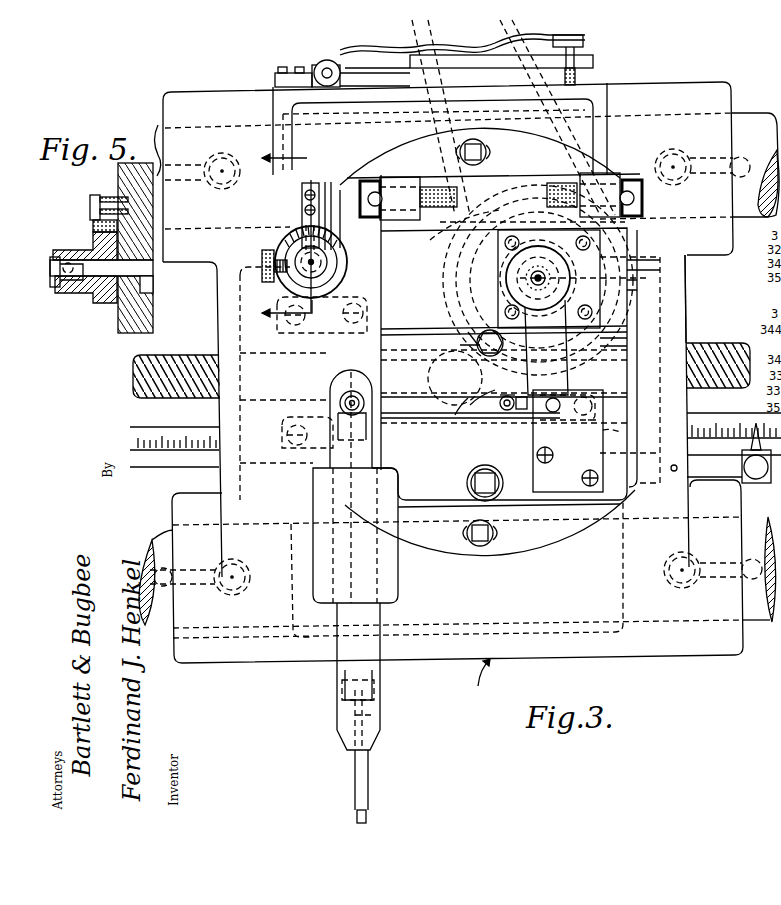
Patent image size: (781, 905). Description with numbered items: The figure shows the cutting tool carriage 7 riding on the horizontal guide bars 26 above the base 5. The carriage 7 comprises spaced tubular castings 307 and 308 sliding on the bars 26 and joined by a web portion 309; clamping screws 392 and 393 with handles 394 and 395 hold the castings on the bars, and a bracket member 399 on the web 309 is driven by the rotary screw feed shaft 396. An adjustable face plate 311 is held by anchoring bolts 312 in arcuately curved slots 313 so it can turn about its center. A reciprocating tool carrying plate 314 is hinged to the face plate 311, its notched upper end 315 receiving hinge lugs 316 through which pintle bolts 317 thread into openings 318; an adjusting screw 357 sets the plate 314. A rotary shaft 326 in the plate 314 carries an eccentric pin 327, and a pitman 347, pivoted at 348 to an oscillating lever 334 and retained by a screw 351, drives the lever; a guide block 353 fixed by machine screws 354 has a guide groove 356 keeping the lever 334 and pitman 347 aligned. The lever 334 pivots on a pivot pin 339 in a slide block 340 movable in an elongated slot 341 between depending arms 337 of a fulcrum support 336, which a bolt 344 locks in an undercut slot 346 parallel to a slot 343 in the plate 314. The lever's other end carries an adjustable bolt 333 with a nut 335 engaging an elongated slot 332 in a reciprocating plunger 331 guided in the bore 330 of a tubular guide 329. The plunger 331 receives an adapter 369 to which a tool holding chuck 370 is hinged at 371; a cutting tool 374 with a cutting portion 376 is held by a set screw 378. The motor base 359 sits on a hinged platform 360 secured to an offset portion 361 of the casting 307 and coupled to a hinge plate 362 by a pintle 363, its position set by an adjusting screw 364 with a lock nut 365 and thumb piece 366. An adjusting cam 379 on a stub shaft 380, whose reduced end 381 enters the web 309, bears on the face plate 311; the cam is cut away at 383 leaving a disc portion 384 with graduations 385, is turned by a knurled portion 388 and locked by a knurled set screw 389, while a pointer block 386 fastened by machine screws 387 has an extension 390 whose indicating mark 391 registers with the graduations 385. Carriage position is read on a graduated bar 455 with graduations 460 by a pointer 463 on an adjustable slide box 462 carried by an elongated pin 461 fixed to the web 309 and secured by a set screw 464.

In FIG. 3, the base 5 is at (277, 205).
In FIG. 3, the cutting tool carriage 7 is at (481, 680).
In FIG. 3, the horizontal guide bars 26 is at (761, 118).
In FIG. 3, the tubular casting 307 is at (704, 82).
In FIG. 3, the tubular casting 308 is at (692, 657).
In FIG. 5, the web portion 309 is at (150, 326).
In FIG. 3, the web portion 309 is at (655, 305).
In FIG. 3, the adjustable face plate 311 is at (557, 560).
In FIG. 3, the anchoring bolts 312 is at (471, 140).
In FIG. 3, the arcuately curved slots 313 is at (485, 150).
In FIG. 3, the reciprocating tool carrying plate 314 is at (421, 526).
In FIG. 3, the notched upper end 315 is at (438, 188).
In FIG. 3, the hinge lugs 316 is at (393, 178).
In FIG. 3, the pintle bolts 317 is at (366, 185).
In FIG. 3, the threaded openings 318 is at (547, 185).
In FIG. 3, the rotary shaft 326 is at (622, 285).
In FIG. 3, the eccentric pin 327 is at (621, 265).
In FIG. 3, the tubular guide 329 is at (536, 258).
In FIG. 3, the bore 330 is at (333, 560).
In FIG. 3, the reciprocating plunger 331 is at (378, 617).
In FIG. 3, the elongated slot 332 is at (350, 370).
In FIG. 3, the adjustable bolt 333 is at (340, 405).
In FIG. 3, the pivoted oscillating lever 334 is at (425, 420).
In FIG. 3, the nut 335 is at (392, 400).
In FIG. 3, the fulcrum support 336 is at (478, 340).
In FIG. 3, the depending arm 337 is at (505, 396).
In FIG. 3, the pivot pin 339 is at (507, 412).
In FIG. 3, the slide block 340 is at (490, 410).
In FIG. 3, the elongated slot 341 is at (465, 425).
In FIG. 3, the slot 343 is at (415, 328).
In FIG. 3, the bolt 344 is at (475, 333).
In FIG. 3, the undercut slot 346 is at (620, 335).
In FIG. 3, the pitman 347 is at (567, 374).
In FIG. 3, the pivot connection 348 is at (555, 415).
In FIG. 3, the retaining screw 351 is at (538, 285).
In FIG. 3, the guide block 353 is at (573, 488).
In FIG. 3, the machine screws 354 is at (584, 478).
In FIG. 3, the guide groove 356 is at (614, 429).
In FIG. 3, the adjusting screw 357 is at (467, 485).
In FIG. 3, the motor base 359 is at (345, 52).
In FIG. 3, the hinged platform 360 is at (594, 59).
In FIG. 3, the offset portion 361 is at (312, 60).
In FIG. 3, the hinge plate 362 is at (275, 80).
In FIG. 3, the pintle 363 is at (343, 80).
In FIG. 3, the adjusting screw 364 is at (576, 77).
In FIG. 3, the lock nut 365 is at (594, 53).
In FIG. 3, the thumb piece 366 is at (584, 40).
In FIG. 3, the adapter 369 is at (340, 678).
In FIG. 3, the tool holding chuck 370 is at (338, 720).
In FIG. 3, the hinge point 371 is at (375, 692).
In FIG. 3, the cutting tool 374 is at (368, 781).
In FIG. 3, the cutting portion 376 is at (358, 820).
In FIG. 3, the set screw 378 is at (372, 724).
In FIG. 5, the adjusting cam 379 is at (93, 252).
In FIG. 3, the adjusting cam 379 is at (290, 234).
In FIG. 5, the stub shaft 380 is at (92, 303).
In FIG. 5, the reduced end 381 is at (143, 278).
In FIG. 3, the cutaway portion 383 is at (338, 240).
In FIG. 5, the disc portion 384 is at (146, 293).
In FIG. 3, the disc portion 384 is at (338, 280).
In FIG. 3, the graduations 385 is at (300, 206).
In FIG. 5, the pointer block 386 is at (112, 197).
In FIG. 3, the pointer block 386 is at (306, 182).
In FIG. 5, the machine screws 387 is at (100, 197).
In FIG. 3, the machine screws 387 is at (314, 182).
In FIG. 5, the knurled handle portion 388 is at (70, 290).
In FIG. 3, the knurled handle portion 388 is at (287, 278).
In FIG. 5, the knurled set screw 389 is at (62, 288).
In FIG. 3, the knurled set screw 389 is at (262, 262).
In FIG. 5, the extension 390 is at (93, 232).
In FIG. 3, the indicating mark 391 is at (327, 198).
In FIG. 3, the clamping screw 392 is at (222, 158).
In FIG. 3, the clamping screw 393 is at (236, 596).
In FIG. 3, the handle 394 is at (190, 160).
In FIG. 3, the handle 395 is at (192, 569).
In FIG. 3, the rotary screw feed shaft 396 is at (719, 343).
In FIG. 3, the bracket member 399 is at (270, 352).
In FIG. 3, the graduated bar 455 is at (160, 467).
In FIG. 3, the graduations 460 is at (170, 437).
In FIG. 3, the elongated pin 461 is at (714, 469).
In FIG. 3, the adjustable slide box 462 is at (760, 486).
In FIG. 3, the pointer 463 is at (736, 446).
In FIG. 3, the set screw 464 is at (755, 480).